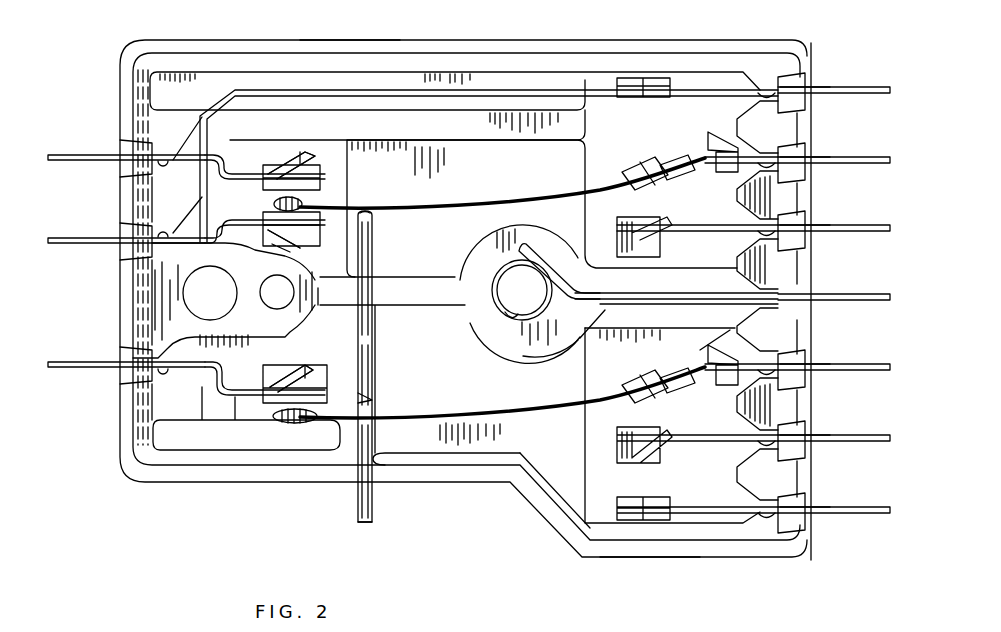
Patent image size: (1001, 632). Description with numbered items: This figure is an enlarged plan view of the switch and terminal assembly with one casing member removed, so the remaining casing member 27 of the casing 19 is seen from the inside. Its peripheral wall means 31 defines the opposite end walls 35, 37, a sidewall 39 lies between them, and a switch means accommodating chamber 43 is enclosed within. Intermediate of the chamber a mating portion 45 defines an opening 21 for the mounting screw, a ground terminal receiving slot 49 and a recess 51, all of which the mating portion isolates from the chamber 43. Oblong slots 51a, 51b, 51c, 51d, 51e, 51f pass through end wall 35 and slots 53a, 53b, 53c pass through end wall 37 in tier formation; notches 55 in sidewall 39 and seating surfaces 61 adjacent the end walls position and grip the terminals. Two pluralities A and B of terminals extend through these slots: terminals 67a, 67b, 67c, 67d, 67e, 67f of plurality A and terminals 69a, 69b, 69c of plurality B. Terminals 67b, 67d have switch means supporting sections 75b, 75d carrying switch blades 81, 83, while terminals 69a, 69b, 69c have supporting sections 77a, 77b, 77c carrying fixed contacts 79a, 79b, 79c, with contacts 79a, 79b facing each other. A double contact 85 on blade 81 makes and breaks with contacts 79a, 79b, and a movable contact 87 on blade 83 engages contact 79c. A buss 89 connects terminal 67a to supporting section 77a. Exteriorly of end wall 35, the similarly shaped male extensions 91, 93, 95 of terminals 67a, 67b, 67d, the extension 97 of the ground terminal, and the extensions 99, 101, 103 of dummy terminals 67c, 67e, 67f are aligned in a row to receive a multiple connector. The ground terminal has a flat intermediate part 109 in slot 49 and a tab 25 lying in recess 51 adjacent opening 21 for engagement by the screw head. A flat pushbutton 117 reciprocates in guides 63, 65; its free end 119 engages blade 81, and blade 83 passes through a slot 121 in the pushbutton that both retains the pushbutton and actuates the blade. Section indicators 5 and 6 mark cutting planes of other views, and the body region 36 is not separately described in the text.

The casing 19 is at (601, 576).
The opening 21 is at (503, 337).
The tab 25 is at (548, 260).
The casing member 27 is at (618, 40).
The peripheral wall means 31 is at (348, 40).
The end wall 35 is at (814, 530).
The base body 36 is at (225, 300).
The end wall 37 is at (120, 450).
The sidewall 39 is at (428, 447).
The switch means accommodating chamber 43 is at (505, 447).
The mating portion 45 is at (468, 264).
The ground terminal receiving slot 49 is at (572, 347).
The recess 51 is at (500, 252).
The slot 51a is at (804, 72).
The slot 51b is at (804, 142).
The slot 51c is at (804, 210).
The slot 51d is at (804, 350).
The slot 51e is at (804, 422).
The slot 51f is at (804, 545).
The slot 53a is at (125, 140).
The slot 53b is at (124, 260).
The slot 53c is at (124, 390).
The notch 55 is at (308, 160).
The seating surface 61 is at (590, 292).
The pushbutton receiving guide 63 is at (356, 478).
The pushbutton receiving guide 65 is at (395, 306).
The terminal 67a is at (855, 86).
The terminal 67b is at (865, 156).
The dummy terminal 67c is at (865, 225).
The terminal 67d is at (865, 364).
The dummy terminal 67e is at (865, 435).
The dummy terminal 67f is at (865, 507).
The terminal 69a is at (78, 163).
The terminal 69b is at (78, 237).
The terminal 69c is at (90, 360).
The switch means supporting section 75b is at (642, 165).
The switch means supporting section 75d is at (642, 383).
The switch means supporting section 77a is at (280, 170).
The switch means supporting section 77b is at (212, 215).
The switch means supporting section 77c is at (240, 418).
The fixed contact 79a is at (328, 178).
The fixed contact 79b is at (306, 242).
The fixed contact 79c is at (316, 367).
The switch blade 81 is at (480, 204).
The switch blade 83 is at (405, 416).
The double contact 85 is at (303, 203).
The movable contact 87 is at (316, 424).
The buss 89 is at (398, 92).
The male extension 91 is at (891, 88).
The male extension 93 is at (891, 160).
The male extension 95 is at (891, 372).
The male extension 97 is at (891, 300).
The male extension 99 is at (891, 229).
The male extension 101 is at (891, 442).
The male extension 103 is at (891, 514).
The intermediate part 109 is at (640, 306).
The pushbutton 117 is at (358, 520).
The free end 119 is at (371, 217).
The slot 121 is at (376, 402).
The section line 5- 5 is at (917, 377).
The section line 6- 6 is at (461, 300).
The terminal plurality A is at (883, 66).
The terminal plurality B is at (69, 408).